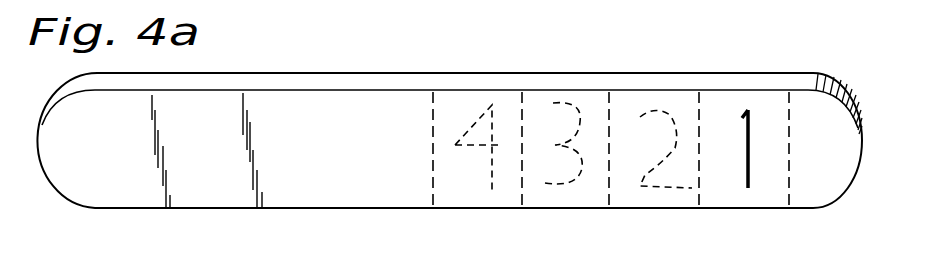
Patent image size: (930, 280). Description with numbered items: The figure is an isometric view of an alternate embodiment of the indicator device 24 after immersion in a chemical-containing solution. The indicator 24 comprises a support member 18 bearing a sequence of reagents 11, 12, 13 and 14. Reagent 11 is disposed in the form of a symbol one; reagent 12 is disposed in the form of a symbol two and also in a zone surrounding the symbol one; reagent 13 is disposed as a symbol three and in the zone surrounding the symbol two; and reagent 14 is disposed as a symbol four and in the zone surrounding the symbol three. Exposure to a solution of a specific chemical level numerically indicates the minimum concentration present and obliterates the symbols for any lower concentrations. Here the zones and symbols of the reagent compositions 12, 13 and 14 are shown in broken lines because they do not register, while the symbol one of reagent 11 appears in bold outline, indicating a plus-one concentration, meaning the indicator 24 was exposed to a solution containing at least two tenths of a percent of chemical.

The indicator device 24 is at (230, 57).
The support member 18 is at (350, 79).
The reagent 14 is at (479, 116).
The reagent 13 is at (562, 107).
The reagent 12 is at (655, 112).
The reagent 11 is at (753, 112).